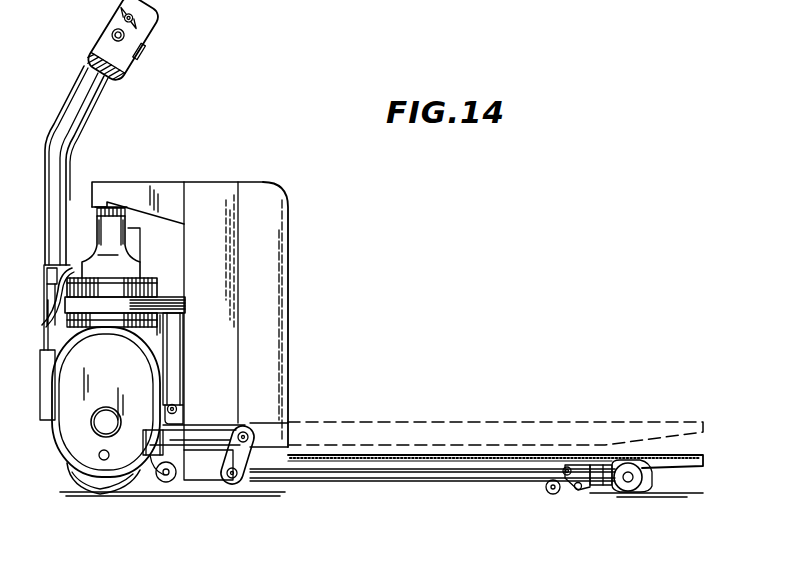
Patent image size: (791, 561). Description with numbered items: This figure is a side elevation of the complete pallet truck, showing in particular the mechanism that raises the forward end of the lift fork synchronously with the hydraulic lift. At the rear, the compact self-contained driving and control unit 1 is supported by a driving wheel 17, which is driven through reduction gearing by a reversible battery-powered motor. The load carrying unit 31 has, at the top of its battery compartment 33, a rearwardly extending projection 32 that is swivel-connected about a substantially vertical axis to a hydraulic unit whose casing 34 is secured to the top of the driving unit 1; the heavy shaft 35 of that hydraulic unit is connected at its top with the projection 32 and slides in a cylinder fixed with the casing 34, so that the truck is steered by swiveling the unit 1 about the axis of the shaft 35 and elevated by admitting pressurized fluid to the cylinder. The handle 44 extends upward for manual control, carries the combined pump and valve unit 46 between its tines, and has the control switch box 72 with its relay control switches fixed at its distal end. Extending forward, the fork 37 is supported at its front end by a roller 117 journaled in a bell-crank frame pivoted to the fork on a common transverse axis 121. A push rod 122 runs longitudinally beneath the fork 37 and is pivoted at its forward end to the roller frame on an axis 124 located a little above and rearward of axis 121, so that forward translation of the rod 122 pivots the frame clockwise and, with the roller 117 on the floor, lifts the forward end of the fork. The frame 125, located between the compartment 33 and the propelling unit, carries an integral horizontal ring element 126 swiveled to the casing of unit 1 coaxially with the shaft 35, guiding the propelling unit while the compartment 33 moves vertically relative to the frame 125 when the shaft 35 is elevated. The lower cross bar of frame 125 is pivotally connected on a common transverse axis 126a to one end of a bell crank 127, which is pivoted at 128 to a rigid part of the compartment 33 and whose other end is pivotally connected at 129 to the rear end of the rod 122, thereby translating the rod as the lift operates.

The driving and control unit 1 is at (52, 459).
The driving wheel 17 is at (104, 490).
The load carrying unit 31 is at (303, 257).
The projection 32 is at (156, 192).
The battery compartment 33 is at (272, 292).
The hydraulic unit casing 34 is at (135, 266).
The shaft 35 is at (97, 212).
The fork 37 is at (466, 458).
The handle 44 is at (45, 283).
The combined pump and valve unit 46 is at (42, 406).
The control switch box 72 is at (88, 42).
The roller 117 is at (636, 493).
The transverse axis 121 is at (580, 490).
The push rod 122 is at (373, 470).
The pivot axis 124 is at (567, 467).
The frame 125 is at (186, 341).
The ring element 126 is at (160, 306).
The transverse pivot axis 126a is at (177, 402).
The bell crank 127 is at (210, 428).
The bell crank pivot 128 is at (250, 430).
The rod pivot connection 129 is at (231, 480).